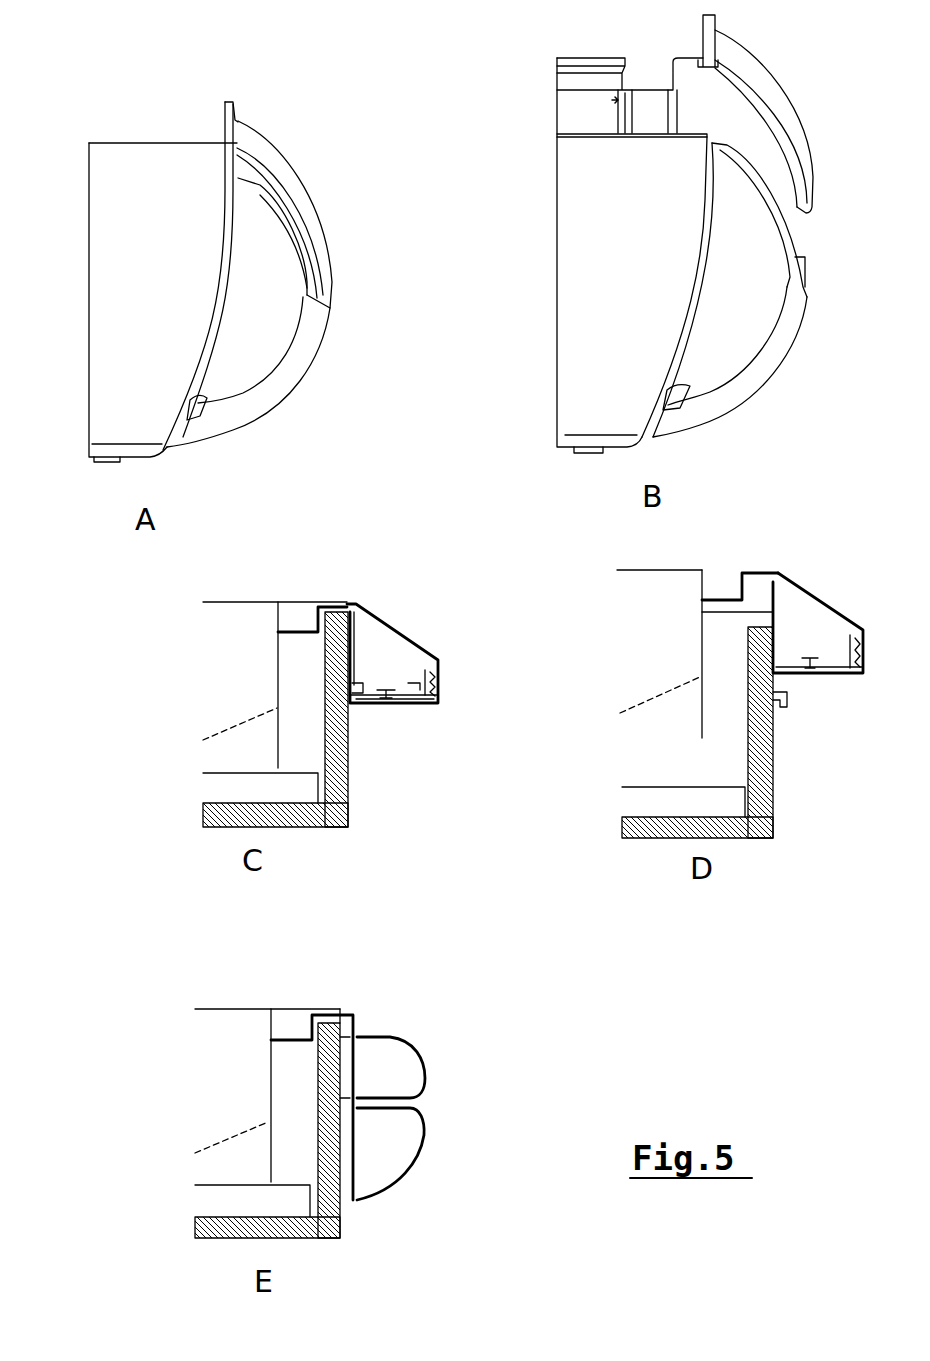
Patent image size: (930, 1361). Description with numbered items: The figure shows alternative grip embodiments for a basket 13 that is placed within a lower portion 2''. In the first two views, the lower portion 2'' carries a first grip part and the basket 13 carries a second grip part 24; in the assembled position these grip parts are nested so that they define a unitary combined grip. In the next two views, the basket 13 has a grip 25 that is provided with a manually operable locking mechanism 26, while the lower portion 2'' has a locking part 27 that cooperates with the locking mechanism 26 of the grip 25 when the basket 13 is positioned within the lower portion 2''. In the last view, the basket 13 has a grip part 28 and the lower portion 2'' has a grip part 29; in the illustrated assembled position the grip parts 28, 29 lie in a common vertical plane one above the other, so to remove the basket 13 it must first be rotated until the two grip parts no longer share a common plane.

The lower portion 2'' is at (428, 664).
The basket 13 is at (566, 98).
The second grip part 24 is at (290, 175).
The grip 25 is at (290, 360).
The locking mechanism 26 is at (412, 694).
The locking part 27 is at (363, 683).
The grip part 28 is at (403, 1172).
The grip part 29 is at (410, 1050).